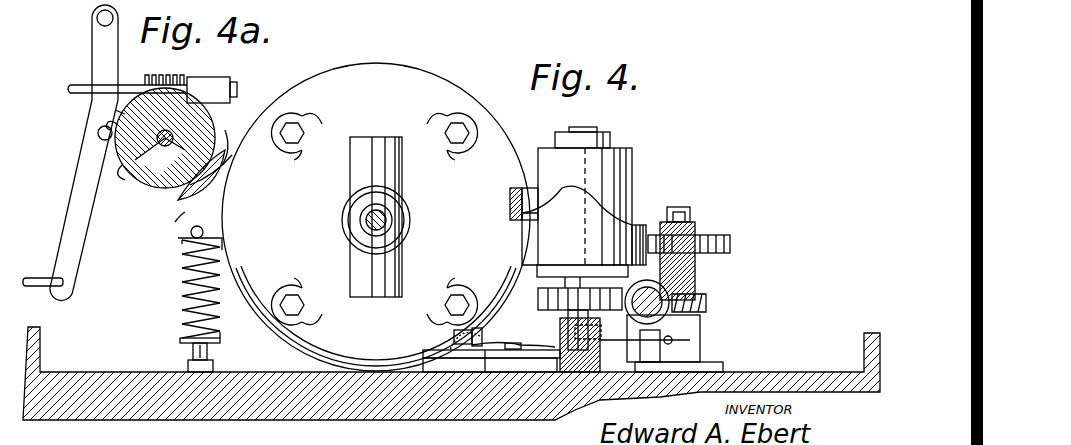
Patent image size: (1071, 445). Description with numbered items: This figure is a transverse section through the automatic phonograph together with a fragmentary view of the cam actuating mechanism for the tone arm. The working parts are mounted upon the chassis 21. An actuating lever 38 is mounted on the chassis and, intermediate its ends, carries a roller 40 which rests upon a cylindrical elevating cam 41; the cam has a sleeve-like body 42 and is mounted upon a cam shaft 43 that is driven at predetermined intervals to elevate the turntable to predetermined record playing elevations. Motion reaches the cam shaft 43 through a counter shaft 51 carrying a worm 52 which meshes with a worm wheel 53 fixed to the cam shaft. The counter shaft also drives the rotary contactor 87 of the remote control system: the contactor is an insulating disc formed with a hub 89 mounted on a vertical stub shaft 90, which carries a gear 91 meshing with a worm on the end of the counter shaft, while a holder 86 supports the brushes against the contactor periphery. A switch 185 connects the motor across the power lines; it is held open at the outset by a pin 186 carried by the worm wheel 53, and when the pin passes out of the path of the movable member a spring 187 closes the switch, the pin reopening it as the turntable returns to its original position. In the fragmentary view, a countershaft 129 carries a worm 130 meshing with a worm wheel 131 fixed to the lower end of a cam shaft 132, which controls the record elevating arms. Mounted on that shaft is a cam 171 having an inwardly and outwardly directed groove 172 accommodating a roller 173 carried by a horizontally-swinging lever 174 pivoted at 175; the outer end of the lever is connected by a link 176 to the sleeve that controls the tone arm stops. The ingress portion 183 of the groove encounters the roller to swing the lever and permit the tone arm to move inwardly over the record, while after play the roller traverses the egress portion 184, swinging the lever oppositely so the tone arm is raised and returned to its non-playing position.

In FIG. 4, the chassis 21 is at (447, 418).
In FIG. 4, the actuating lever 38 is at (512, 190).
In FIG. 4, the roller 40 is at (530, 190).
In FIG. 4, the cylindrical elevating cam 41 is at (582, 259).
In FIG. 4, the sleeve-like body 42 is at (630, 158).
In FIG. 4, the cam shaft 43 is at (583, 127).
In FIG. 4, the counter shaft 51 is at (672, 340).
In FIG. 4, the worm 52 is at (650, 320).
In FIG. 4, the worm wheel 53 is at (508, 290).
In FIG. 4, the holder 86 is at (690, 210).
In FIG. 4, the rotary contactor 87 is at (740, 249).
In FIG. 4, the hub 89 is at (697, 270).
In FIG. 4, the vertical stub shaft 90 is at (690, 218).
In FIG. 4, the gear 91 is at (706, 300).
In FIG. 4, the switch 185 is at (549, 344).
In FIG. 4, the pin 186 is at (715, 370).
In FIG. 4, the spring 187 is at (485, 372).
In FIG. 4A, the countershaft 129 is at (237, 88).
In FIG. 4A, the worm 130 is at (180, 60).
In FIG. 4A, the worm wheel 131 is at (120, 112).
In FIG. 4A, the cam shaft 132 is at (158, 153).
In FIG. 4A, the cam 171 is at (158, 210).
In FIG. 4A, the groove 172 is at (226, 150).
In FIG. 4A, the roller 173 is at (98, 134).
In FIG. 4A, the horizontally-swinging lever 174 is at (85, 178).
In FIG. 4A, the pivot 175 is at (98, 18).
In FIG. 4A, the link 176 is at (55, 275).
In FIG. 4A, the ingress portion 183 is at (192, 200).
In FIG. 4A, the egress portion 184 is at (178, 222).